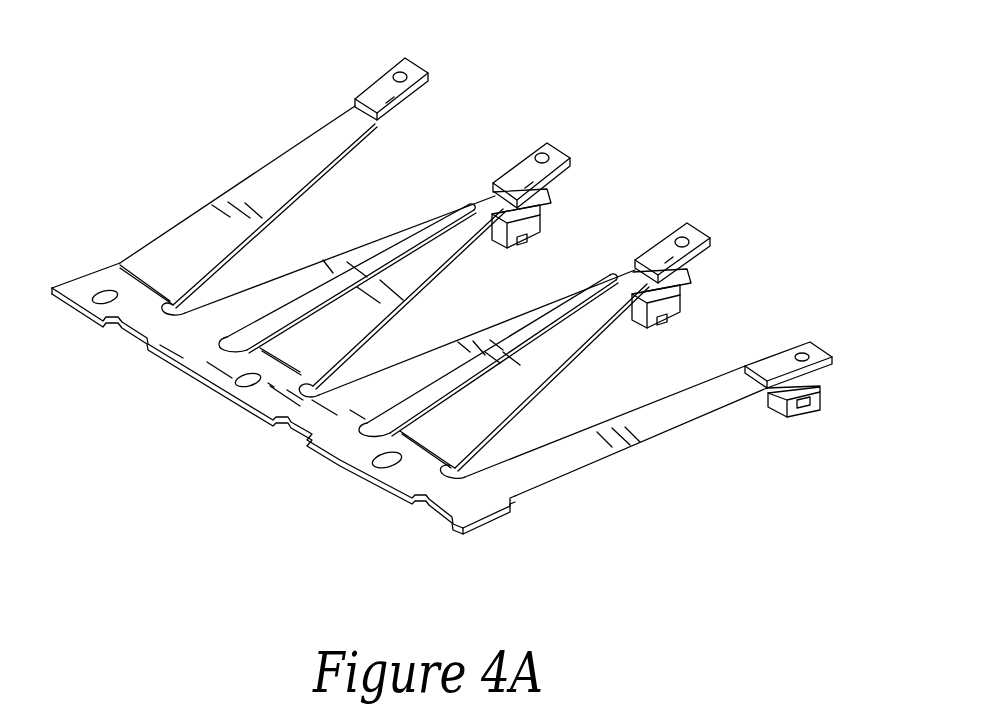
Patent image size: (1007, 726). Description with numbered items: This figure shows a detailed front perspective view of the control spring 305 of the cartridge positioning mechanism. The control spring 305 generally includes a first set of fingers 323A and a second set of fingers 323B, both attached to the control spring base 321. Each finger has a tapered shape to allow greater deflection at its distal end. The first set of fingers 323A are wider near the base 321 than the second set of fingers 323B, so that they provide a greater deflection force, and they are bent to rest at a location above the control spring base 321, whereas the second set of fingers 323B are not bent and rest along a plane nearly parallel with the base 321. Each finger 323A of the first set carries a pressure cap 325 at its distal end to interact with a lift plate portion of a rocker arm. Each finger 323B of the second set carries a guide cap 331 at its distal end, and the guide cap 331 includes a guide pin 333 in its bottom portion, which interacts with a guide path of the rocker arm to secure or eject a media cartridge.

The control spring 305 is at (672, 108).
The control spring base 321 is at (413, 478).
The first set of fingers 323A is at (325, 163).
The second set of fingers 323B is at (375, 257).
The pressure cap 325 is at (417, 67).
The guide cap 331 is at (548, 192).
The guide pin 333 is at (524, 243).